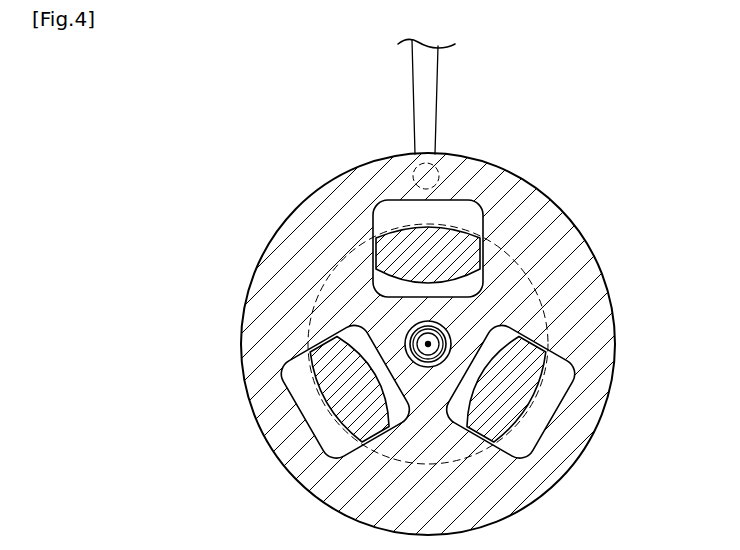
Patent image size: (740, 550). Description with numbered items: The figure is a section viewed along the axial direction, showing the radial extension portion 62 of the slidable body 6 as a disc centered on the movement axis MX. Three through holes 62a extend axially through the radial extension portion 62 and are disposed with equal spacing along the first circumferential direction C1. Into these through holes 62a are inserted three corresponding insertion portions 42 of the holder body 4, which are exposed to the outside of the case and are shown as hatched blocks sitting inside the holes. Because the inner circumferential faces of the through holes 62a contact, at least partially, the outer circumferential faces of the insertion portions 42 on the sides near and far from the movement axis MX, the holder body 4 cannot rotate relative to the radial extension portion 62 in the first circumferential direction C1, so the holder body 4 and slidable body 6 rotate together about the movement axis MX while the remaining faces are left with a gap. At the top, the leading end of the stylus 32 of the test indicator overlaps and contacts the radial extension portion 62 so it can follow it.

The holder body 4 is at (322, 397).
The slidable body 6 is at (370, 275).
The stylus 32 is at (412, 95).
The insertion portion 42 is at (443, 242).
The radial extension portion 62 is at (294, 231).
The through hole 62a is at (392, 218).
The movement axis MX is at (427, 343).
The first circumferential direction C1 is at (653, 277).